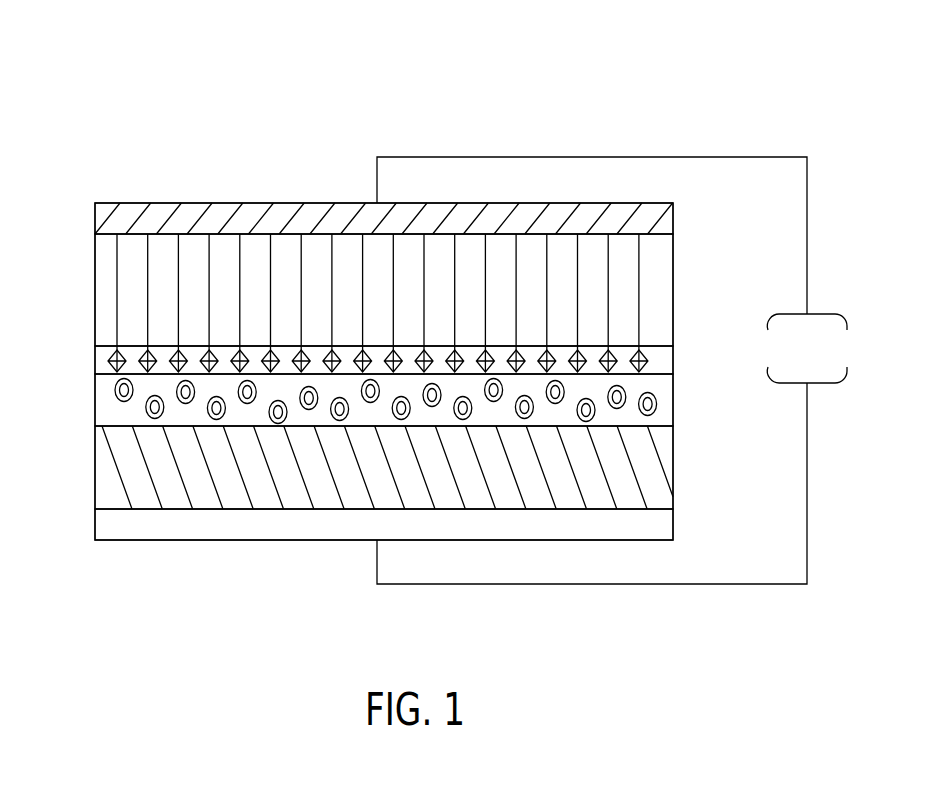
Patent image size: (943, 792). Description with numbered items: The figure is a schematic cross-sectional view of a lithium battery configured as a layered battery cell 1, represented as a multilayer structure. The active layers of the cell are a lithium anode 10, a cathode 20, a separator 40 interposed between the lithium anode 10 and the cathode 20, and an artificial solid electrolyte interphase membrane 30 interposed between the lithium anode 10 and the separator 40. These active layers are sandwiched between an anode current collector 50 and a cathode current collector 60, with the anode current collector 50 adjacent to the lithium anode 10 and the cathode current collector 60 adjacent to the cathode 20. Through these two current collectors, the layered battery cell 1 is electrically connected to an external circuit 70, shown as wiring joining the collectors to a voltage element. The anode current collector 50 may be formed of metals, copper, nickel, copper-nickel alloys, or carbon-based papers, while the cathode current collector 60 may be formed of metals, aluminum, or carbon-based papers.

The layered battery cell 1 is at (151, 93).
The lithium anode 10 is at (100, 290).
The cathode 20 is at (102, 470).
The artificial solid electrolyte interphase membrane 30 is at (100, 366).
The separator 40 is at (100, 395).
The anode current collector 50 is at (100, 210).
The cathode current collector 60 is at (102, 533).
The external circuit 70 is at (580, 157).